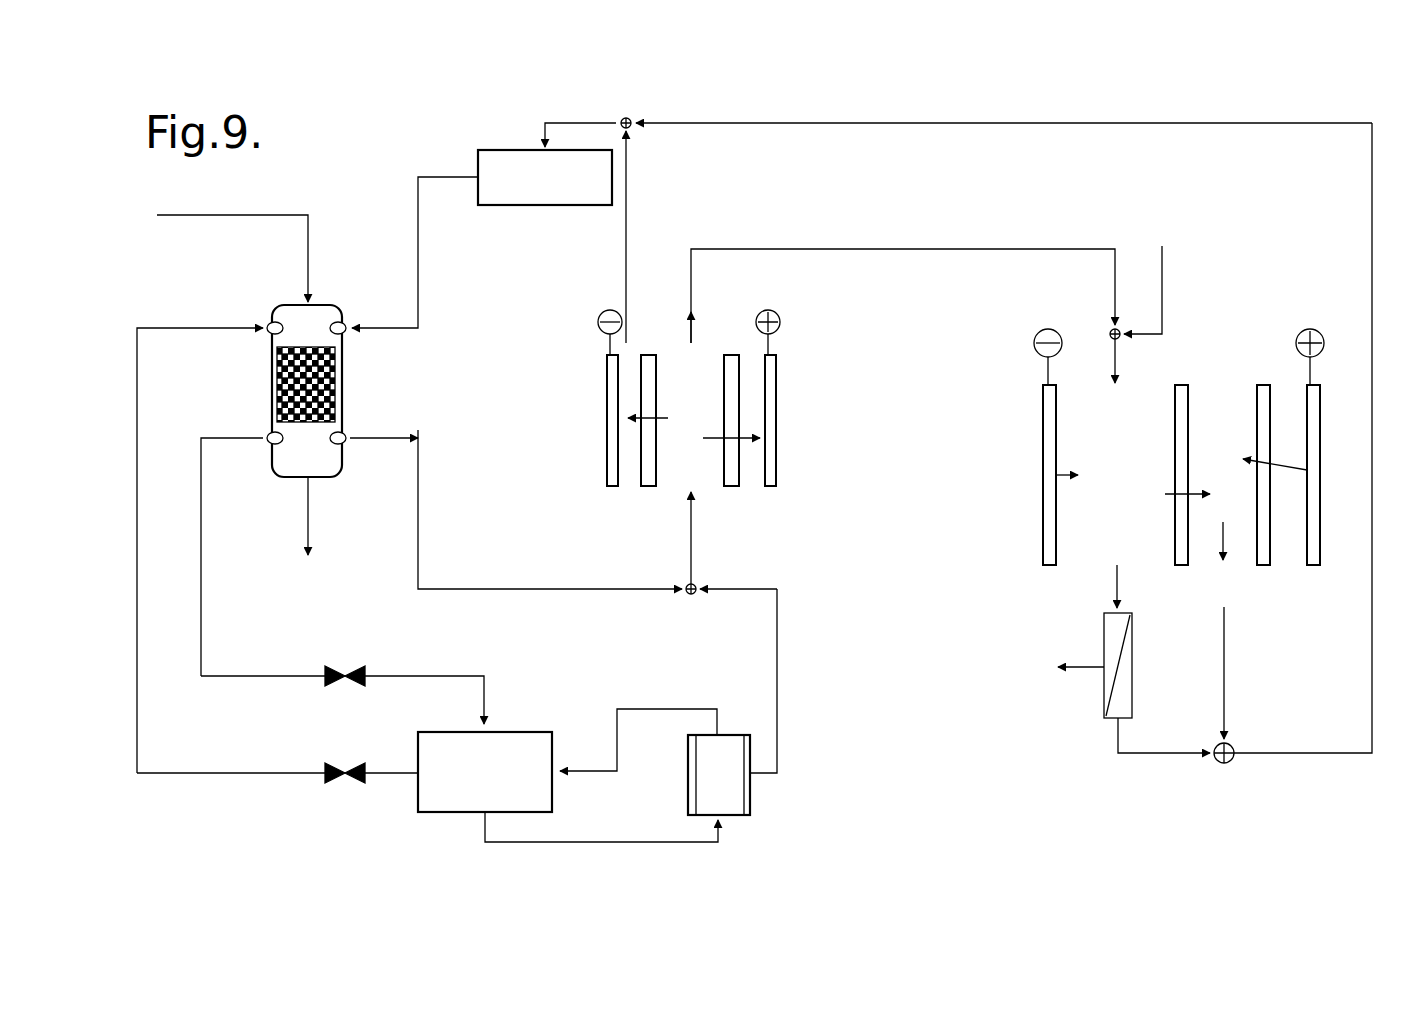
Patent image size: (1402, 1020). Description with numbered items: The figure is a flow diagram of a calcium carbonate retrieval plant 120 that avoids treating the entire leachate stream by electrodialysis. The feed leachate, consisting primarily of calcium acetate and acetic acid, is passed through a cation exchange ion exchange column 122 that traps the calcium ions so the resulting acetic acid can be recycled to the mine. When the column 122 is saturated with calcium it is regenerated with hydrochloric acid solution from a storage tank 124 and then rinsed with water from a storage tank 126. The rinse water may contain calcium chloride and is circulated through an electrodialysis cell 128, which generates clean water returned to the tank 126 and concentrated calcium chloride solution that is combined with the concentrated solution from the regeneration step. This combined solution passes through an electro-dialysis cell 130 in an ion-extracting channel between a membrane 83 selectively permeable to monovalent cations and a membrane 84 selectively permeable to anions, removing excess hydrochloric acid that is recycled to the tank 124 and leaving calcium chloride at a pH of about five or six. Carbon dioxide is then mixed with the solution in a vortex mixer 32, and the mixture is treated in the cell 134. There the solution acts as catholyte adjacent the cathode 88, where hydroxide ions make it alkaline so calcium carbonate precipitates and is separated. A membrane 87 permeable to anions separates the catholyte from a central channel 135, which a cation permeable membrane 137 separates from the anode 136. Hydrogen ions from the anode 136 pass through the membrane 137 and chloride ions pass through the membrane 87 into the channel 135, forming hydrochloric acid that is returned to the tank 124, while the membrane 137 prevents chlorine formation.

The calcium carbonate retrieval plant 120 is at (366, 174).
The cation exchange ion exchange column 122 is at (282, 395).
The storage tank 124 is at (505, 205).
The storage tank 126 is at (443, 728).
The electrodialysis cell 128 is at (752, 800).
The electro-dialysis cell 130 is at (596, 378).
The membrane 83 is at (648, 486).
The membrane 84 is at (733, 486).
The vortex mixer 32 is at (1110, 330).
The cell 134 is at (1263, 330).
The central channel 135 is at (1241, 419).
The anode 136 is at (1336, 414).
The membrane 137 is at (1260, 385).
The membrane 87 is at (1180, 385).
The cathode 88 is at (1043, 550).